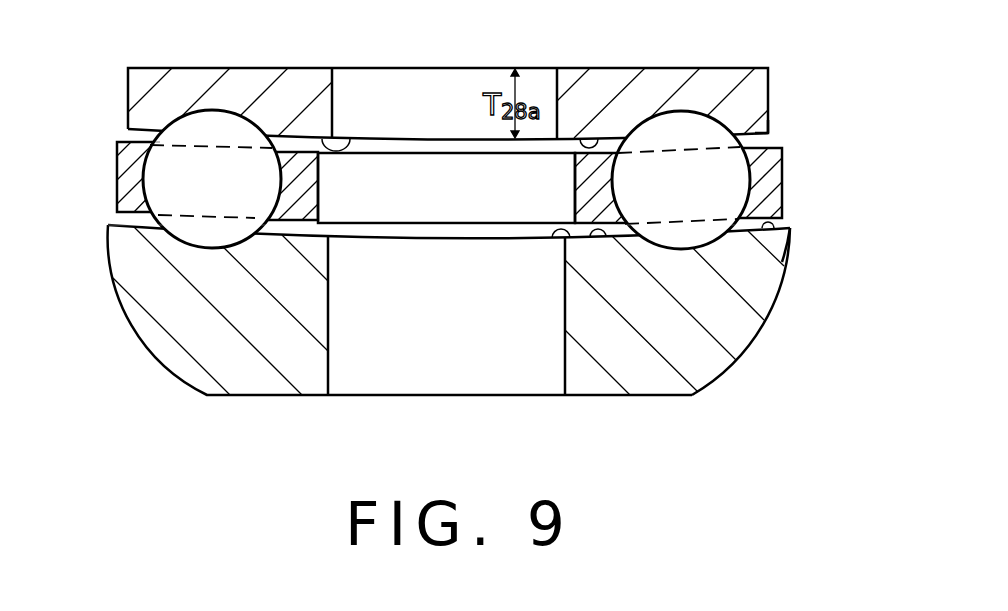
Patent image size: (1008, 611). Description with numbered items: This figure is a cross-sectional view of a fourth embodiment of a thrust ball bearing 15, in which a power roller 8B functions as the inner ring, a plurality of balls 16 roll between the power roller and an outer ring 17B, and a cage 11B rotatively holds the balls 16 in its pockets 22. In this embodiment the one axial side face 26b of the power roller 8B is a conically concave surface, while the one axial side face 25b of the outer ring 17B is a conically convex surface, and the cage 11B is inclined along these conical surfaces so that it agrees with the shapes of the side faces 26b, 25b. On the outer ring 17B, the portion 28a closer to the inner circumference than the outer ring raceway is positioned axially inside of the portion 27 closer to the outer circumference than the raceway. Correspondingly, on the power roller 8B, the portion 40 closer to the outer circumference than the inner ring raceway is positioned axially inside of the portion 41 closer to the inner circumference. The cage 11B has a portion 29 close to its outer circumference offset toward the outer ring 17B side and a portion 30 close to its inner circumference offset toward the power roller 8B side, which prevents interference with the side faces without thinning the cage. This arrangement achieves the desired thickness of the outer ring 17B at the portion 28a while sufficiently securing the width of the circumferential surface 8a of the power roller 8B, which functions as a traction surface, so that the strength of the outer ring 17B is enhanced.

The power roller 8B is at (758, 292).
The circumferential surface 8a is at (747, 350).
The cage 11B is at (782, 200).
The thrust ball bearing 15 is at (195, 128).
The balls 16 is at (232, 130).
The outer ring 17B is at (725, 90).
The pockets 22 is at (155, 142).
The one axial side face of the outer ring 25b is at (353, 139).
The one axial side face of the power roller 26b is at (555, 238).
The portion closer to the outer circumference than the outer ring raceway 27 is at (762, 137).
The portion closer to the inner circumference than the outer ring raceway 28a is at (582, 138).
The portion close to the outer circumference of the cage 29 is at (782, 175).
The portion close to the inner circumference of the cage 30 is at (587, 192).
The portion closer to the outer circumference than the inner ring raceway 40 is at (783, 253).
The portion closer to the inner circumference than the inner ring raceway 41 is at (594, 240).